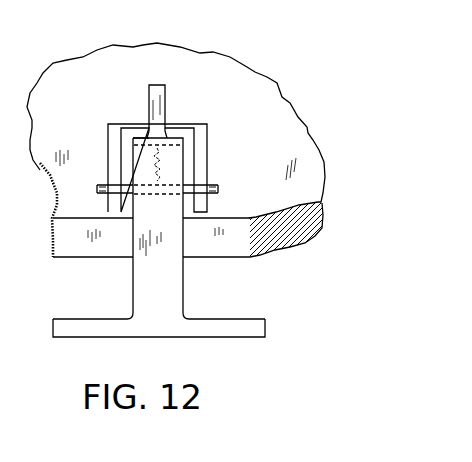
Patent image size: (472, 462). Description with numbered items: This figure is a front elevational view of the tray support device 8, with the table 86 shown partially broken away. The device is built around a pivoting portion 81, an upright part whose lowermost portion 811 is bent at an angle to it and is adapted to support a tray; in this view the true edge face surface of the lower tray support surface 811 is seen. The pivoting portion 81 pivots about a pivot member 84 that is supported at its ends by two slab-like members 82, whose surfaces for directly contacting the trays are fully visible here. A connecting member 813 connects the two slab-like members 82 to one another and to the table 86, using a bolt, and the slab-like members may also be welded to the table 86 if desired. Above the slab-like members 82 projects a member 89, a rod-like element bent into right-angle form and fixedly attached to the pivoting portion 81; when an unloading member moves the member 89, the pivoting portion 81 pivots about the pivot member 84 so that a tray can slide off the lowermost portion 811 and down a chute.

The tray support device 8 is at (301, 76).
The pivoting portion 81 is at (178, 296).
The lowermost portion 811 is at (248, 333).
The connecting member 813 is at (133, 136).
The slab-like members 82 is at (108, 143).
The pivot member 84 is at (97, 186).
The table 86 is at (244, 92).
The member 89 is at (143, 97).